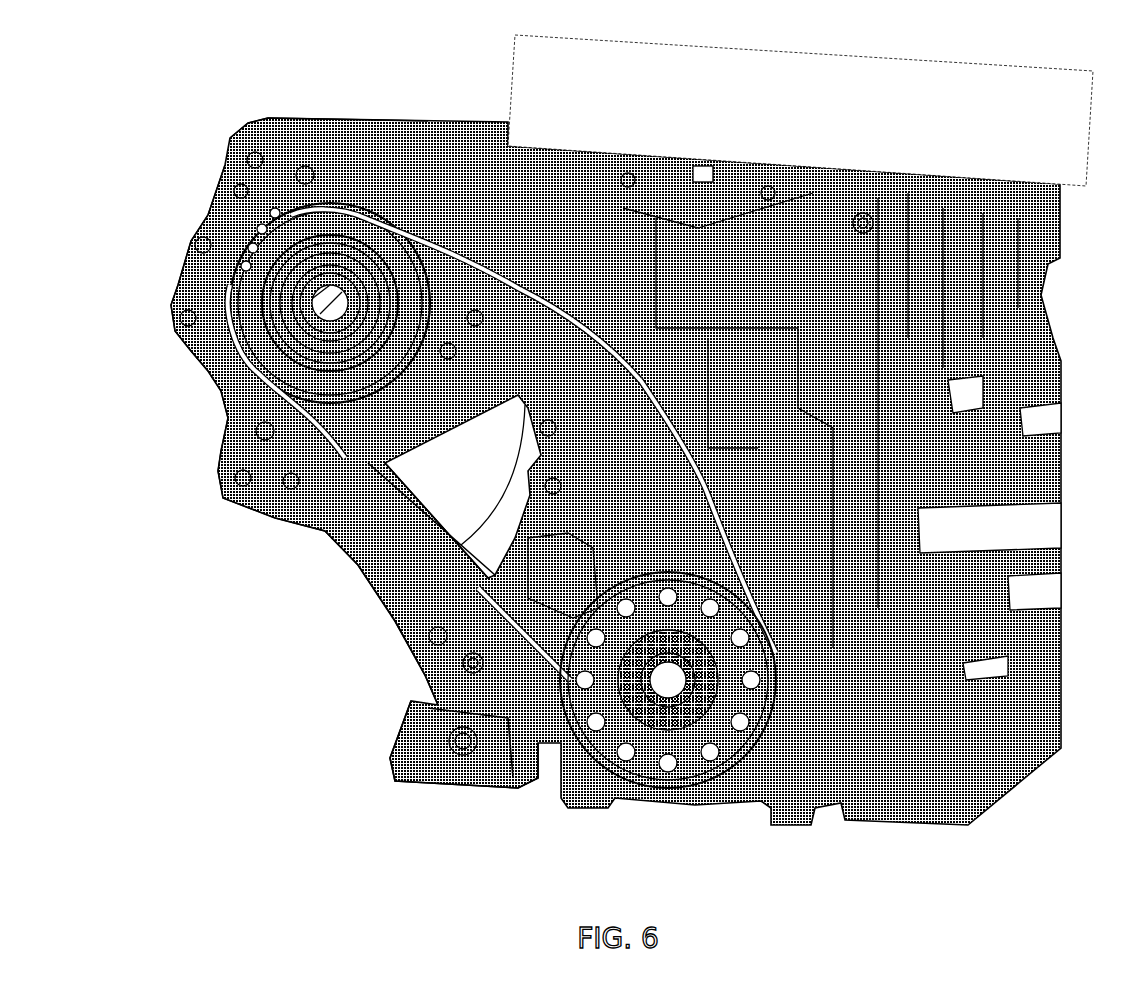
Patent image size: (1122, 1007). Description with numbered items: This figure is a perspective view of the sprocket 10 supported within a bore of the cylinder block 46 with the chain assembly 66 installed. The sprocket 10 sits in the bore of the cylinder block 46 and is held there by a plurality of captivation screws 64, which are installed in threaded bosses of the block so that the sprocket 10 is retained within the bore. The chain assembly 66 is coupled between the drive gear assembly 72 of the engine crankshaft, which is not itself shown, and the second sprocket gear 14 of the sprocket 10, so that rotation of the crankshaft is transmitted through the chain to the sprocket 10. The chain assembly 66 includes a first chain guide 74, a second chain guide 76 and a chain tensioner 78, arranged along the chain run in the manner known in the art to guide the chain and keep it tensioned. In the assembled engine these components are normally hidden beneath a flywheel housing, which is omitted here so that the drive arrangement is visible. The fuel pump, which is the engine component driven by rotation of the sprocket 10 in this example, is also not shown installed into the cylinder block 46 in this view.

The sprocket 10 is at (261, 289).
The second sprocket gear 14 is at (297, 470).
The cylinder block 46 is at (358, 118).
The captivation screws 64 is at (293, 153).
The chain assembly 66 is at (258, 360).
The drive gear assembly 72 is at (690, 765).
The first chain guide 74 is at (378, 533).
The second chain guide 76 is at (574, 535).
The chain tensioner 78 is at (430, 670).